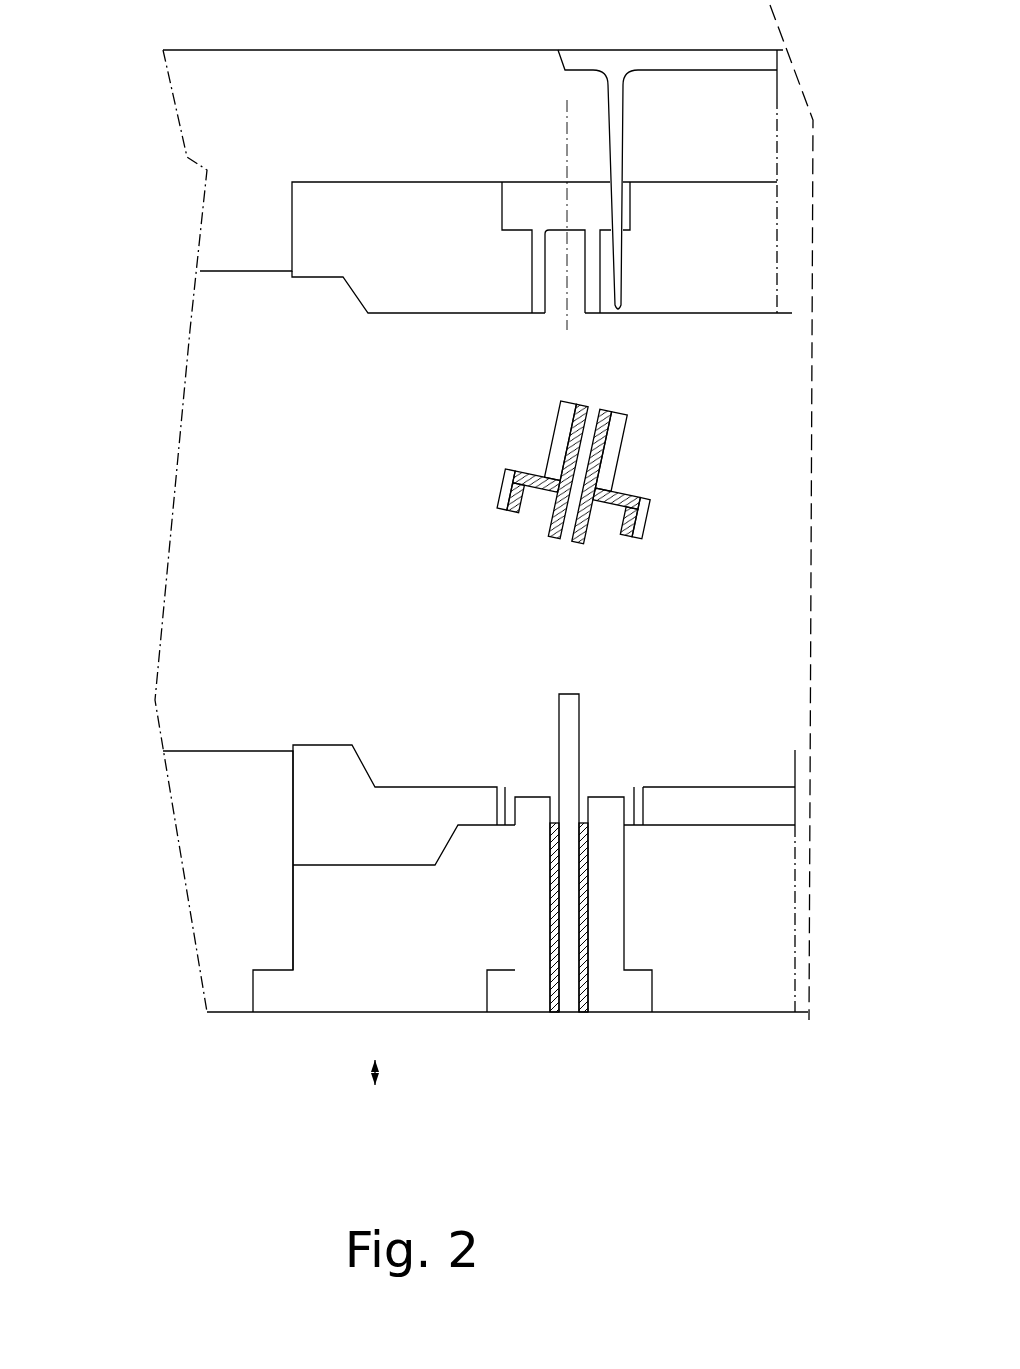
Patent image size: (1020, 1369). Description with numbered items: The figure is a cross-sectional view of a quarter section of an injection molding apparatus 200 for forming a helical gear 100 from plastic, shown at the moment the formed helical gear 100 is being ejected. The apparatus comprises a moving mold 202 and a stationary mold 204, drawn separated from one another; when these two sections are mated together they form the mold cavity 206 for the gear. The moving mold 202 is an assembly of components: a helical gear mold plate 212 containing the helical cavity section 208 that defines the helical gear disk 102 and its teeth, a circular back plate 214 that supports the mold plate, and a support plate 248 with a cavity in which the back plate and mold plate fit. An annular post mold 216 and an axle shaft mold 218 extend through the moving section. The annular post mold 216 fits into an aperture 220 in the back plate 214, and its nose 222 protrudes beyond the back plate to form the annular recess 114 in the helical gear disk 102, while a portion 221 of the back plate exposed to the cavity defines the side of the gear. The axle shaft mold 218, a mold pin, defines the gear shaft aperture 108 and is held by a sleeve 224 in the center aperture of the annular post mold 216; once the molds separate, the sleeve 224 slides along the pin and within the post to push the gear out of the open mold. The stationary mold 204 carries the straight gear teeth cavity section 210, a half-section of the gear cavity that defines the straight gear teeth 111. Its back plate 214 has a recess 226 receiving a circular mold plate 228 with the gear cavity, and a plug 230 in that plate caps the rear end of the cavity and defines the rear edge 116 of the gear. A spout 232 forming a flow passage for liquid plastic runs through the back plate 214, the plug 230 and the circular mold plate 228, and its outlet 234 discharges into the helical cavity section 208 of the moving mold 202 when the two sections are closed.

The helical gear 100 is at (643, 458).
The helical gear disk 102 is at (652, 520).
The gear shaft aperture 108 is at (565, 542).
The straight gear teeth 111 is at (634, 432).
The annular recess 114 is at (607, 542).
The rear edge 116 is at (582, 226).
The injection molding apparatus 200 is at (624, 1150).
The moving mold 202 is at (150, 755).
The stationary mold 204 is at (146, 53).
The mold cavity 206 is at (558, 318).
The helical cavity section 208 is at (613, 764).
The straight gear teeth cavity section 210 is at (572, 318).
The helical gear mold plate 212 is at (341, 830).
The back plate 214 is at (316, 102).
The annular post mold 216 is at (628, 1014).
The axle shaft mold 218 is at (582, 705).
The aperture 220 is at (628, 900).
The portion of the back plate 221 is at (632, 828).
The nose 222 is at (535, 795).
The sleeve 224 is at (587, 1016).
The recess 226 is at (735, 181).
The circular mold plate 228 is at (701, 287).
The plug 230 is at (520, 210).
The spout 232 is at (632, 90).
The outlet 234 is at (620, 317).
The support plate 248 is at (213, 858).